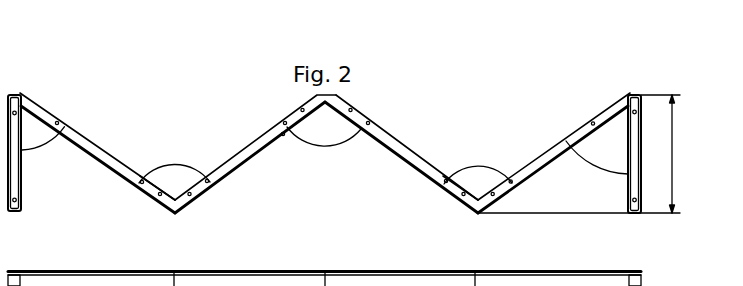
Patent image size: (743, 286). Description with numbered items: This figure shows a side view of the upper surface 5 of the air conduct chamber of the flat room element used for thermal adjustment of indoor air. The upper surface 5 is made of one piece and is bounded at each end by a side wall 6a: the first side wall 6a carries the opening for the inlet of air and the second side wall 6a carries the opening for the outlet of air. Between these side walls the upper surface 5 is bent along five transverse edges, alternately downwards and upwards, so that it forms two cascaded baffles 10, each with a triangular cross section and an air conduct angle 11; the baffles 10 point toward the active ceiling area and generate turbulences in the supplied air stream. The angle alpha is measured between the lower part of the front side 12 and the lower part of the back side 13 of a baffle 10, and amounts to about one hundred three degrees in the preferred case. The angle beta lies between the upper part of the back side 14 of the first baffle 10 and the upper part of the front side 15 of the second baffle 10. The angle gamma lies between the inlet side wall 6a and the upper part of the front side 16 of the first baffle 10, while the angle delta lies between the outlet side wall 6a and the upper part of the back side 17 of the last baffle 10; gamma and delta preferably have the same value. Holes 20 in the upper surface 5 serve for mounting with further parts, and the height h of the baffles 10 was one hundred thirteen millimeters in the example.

The upper surface 5 is at (520, 154).
The side wall 6a is at (22, 158).
The baffle 10 is at (122, 139).
The air conduct angle 11 is at (180, 224).
The lower part of the front side 12 is at (143, 201).
The lower part of the back side 13 is at (216, 199).
The upper part of the back side 14 is at (292, 107).
The upper part of the front side 15 is at (372, 121).
The upper part of the front side 16 is at (70, 123).
The upper part of the back side 17 is at (571, 129).
The holes 20 is at (283, 140).